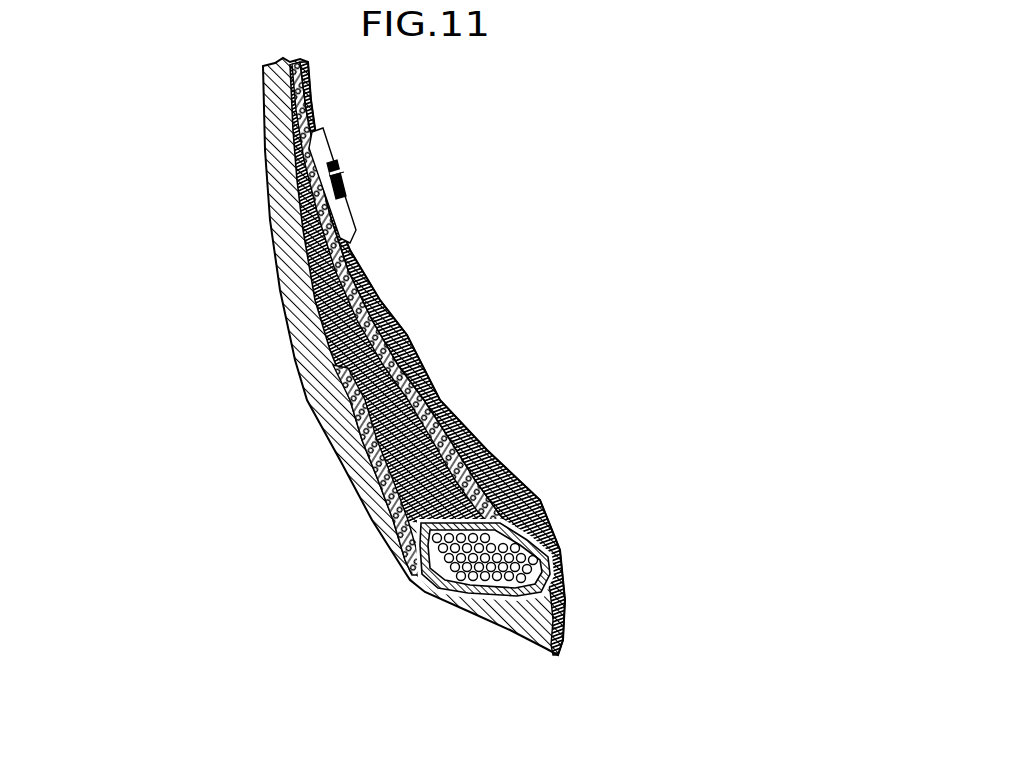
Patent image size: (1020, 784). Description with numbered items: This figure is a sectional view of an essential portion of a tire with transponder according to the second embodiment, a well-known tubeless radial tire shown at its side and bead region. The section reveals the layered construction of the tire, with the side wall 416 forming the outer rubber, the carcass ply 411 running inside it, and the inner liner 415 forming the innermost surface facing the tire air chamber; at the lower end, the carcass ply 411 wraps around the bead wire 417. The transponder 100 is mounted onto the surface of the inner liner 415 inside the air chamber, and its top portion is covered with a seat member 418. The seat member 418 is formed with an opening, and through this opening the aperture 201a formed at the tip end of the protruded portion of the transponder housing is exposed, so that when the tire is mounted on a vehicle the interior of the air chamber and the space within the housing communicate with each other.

The seat member 418 is at (312, 145).
The aperture 201a is at (337, 178).
The transponder 100 is at (345, 193).
The inner liner 415 is at (375, 285).
The carcass ply 411 is at (405, 340).
The side wall 416 is at (268, 235).
The bead wire 417 is at (392, 545).